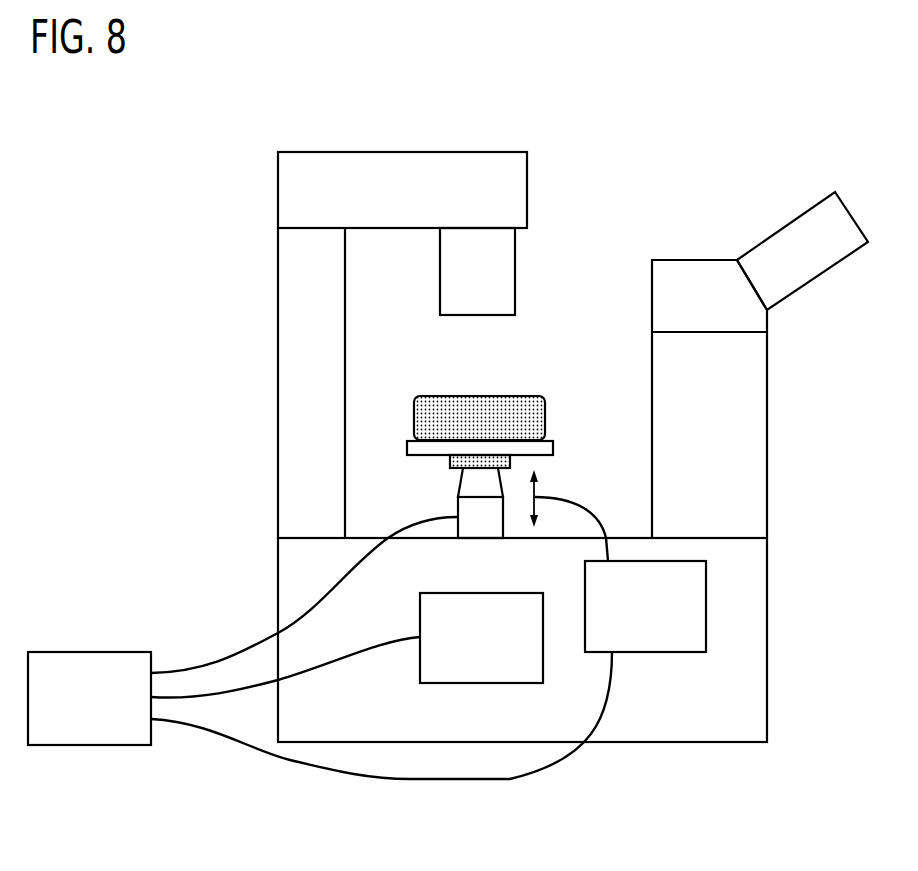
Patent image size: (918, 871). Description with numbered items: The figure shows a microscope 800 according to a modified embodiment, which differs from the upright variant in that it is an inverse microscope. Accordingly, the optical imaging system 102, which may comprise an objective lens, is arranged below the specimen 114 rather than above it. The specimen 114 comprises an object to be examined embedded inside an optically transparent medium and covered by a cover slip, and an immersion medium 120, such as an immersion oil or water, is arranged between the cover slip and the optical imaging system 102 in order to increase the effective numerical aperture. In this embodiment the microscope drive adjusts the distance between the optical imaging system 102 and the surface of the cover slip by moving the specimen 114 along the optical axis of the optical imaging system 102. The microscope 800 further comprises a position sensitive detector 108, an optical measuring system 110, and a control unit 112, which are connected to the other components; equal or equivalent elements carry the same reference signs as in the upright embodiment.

The microscope 800 is at (219, 140).
The specimen 114 is at (562, 391).
The optical imaging system 102 is at (438, 494).
The immersion medium 120 is at (512, 462).
The position sensitive detector 108 is at (666, 619).
The optical measuring system 110 is at (502, 650).
The control unit 112 is at (110, 708).